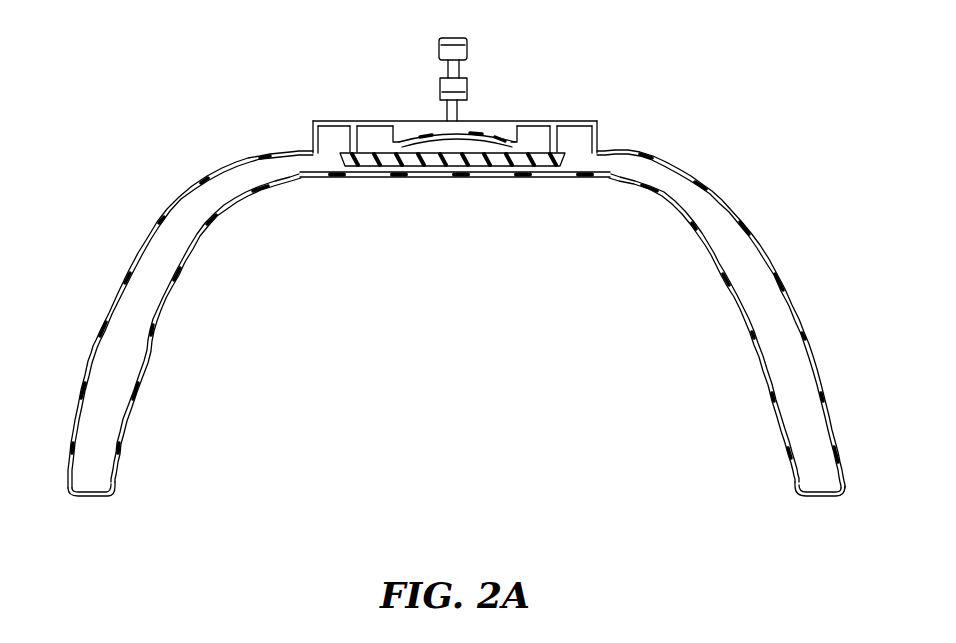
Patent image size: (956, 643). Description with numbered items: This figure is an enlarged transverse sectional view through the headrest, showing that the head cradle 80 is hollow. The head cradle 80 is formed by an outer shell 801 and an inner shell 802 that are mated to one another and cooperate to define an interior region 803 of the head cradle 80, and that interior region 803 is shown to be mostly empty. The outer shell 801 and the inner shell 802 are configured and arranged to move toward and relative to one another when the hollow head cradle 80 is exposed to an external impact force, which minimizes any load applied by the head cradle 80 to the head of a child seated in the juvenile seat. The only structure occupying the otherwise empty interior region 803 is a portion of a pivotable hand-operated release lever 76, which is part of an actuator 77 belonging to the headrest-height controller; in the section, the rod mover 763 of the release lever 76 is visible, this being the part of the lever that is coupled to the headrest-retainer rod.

The head cradle 80 is at (436, 294).
The outer shell 801 is at (153, 352).
The inner shell 802 is at (108, 300).
The interior region 803 is at (132, 308).
The release lever 76 is at (576, 160).
The actuator 77 is at (332, 160).
The rod mover 763 is at (486, 80).